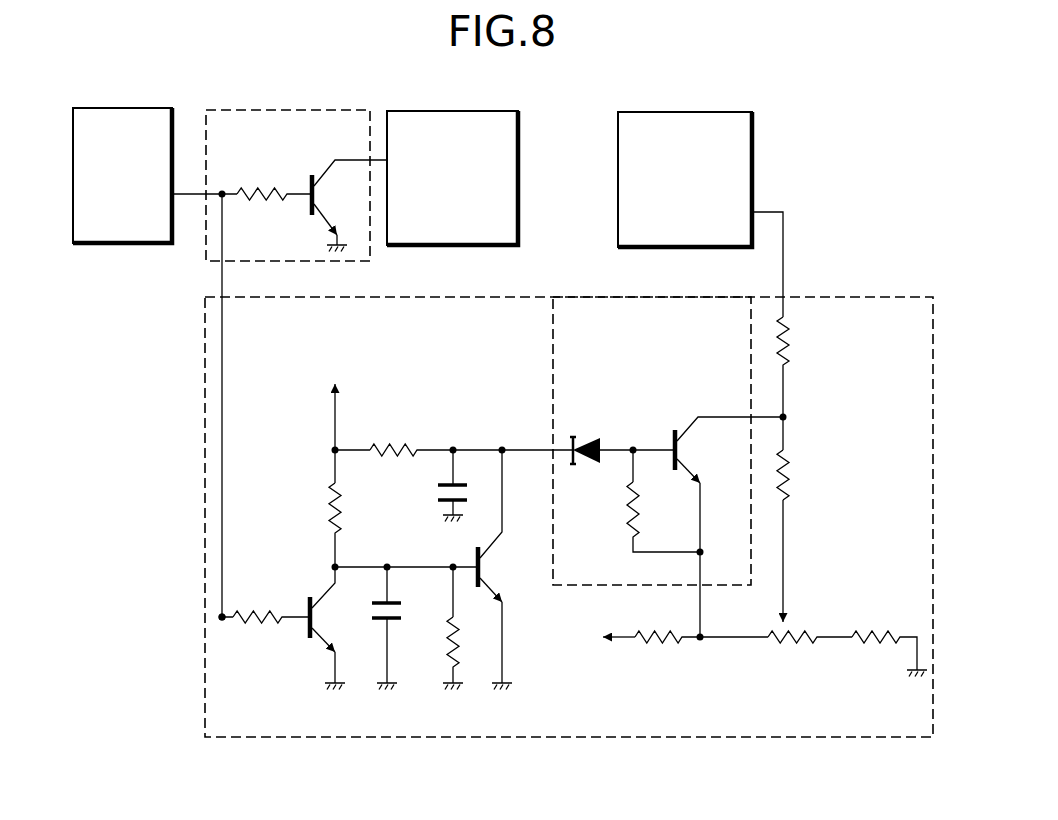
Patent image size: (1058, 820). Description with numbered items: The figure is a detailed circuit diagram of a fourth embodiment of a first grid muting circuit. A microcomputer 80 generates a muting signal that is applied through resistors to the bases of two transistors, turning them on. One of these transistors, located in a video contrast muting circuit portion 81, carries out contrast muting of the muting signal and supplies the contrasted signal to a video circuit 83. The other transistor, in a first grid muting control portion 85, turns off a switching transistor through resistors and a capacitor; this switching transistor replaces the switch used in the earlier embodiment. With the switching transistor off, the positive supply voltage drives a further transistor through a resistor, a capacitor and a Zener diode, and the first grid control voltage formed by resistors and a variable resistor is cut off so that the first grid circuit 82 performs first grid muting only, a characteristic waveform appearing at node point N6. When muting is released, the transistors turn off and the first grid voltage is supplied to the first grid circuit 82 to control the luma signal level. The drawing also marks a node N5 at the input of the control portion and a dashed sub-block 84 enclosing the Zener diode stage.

The microcomputer 80 is at (117, 243).
The video contrast muting circuit portion 81 is at (256, 111).
The first grid circuit 82 is at (752, 173).
The video circuit 83 is at (518, 172).
The detection circuit (ZD6, Q10, R35) 84 is at (668, 434).
The first grid muting control portion 85 is at (569, 505).
The node N5 is at (222, 614).
The node point N6 is at (633, 441).